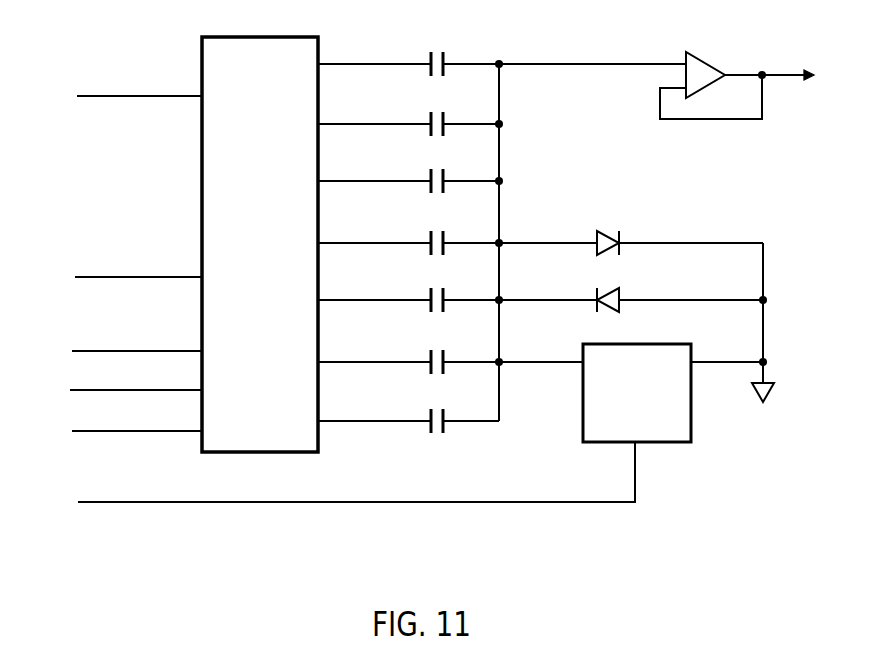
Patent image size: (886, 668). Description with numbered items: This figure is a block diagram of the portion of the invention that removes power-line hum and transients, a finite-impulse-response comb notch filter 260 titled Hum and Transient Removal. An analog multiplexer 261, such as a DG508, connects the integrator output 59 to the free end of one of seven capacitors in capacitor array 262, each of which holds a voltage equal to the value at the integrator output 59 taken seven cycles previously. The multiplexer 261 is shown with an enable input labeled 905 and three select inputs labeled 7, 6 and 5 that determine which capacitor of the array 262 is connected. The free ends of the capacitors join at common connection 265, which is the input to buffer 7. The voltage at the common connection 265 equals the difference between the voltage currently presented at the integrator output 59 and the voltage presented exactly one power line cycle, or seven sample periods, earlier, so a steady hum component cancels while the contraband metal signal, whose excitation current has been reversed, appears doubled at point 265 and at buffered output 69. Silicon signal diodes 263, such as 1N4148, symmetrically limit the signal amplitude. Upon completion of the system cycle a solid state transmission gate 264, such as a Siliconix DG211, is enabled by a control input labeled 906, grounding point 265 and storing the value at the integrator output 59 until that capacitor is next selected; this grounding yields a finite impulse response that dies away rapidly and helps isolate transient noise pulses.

The finite-impulse-response comb notch filter 260 is at (428, 291).
The analog multiplexer 261 is at (266, 251).
The capacitor array 262 is at (436, 226).
The silicon signal diodes 263 is at (634, 271).
The transmission gate 264 is at (609, 393).
The common connection 265 is at (592, 49).
The buffer 7 is at (385, 199).
The buffered output 69 is at (786, 75).
The integrator output 59 is at (105, 120).
The enable line 905 is at (114, 272).
The select line 2 6 is at (123, 384).
The select line 1 5 is at (123, 423).
The transmission gate control line 906 is at (331, 478).